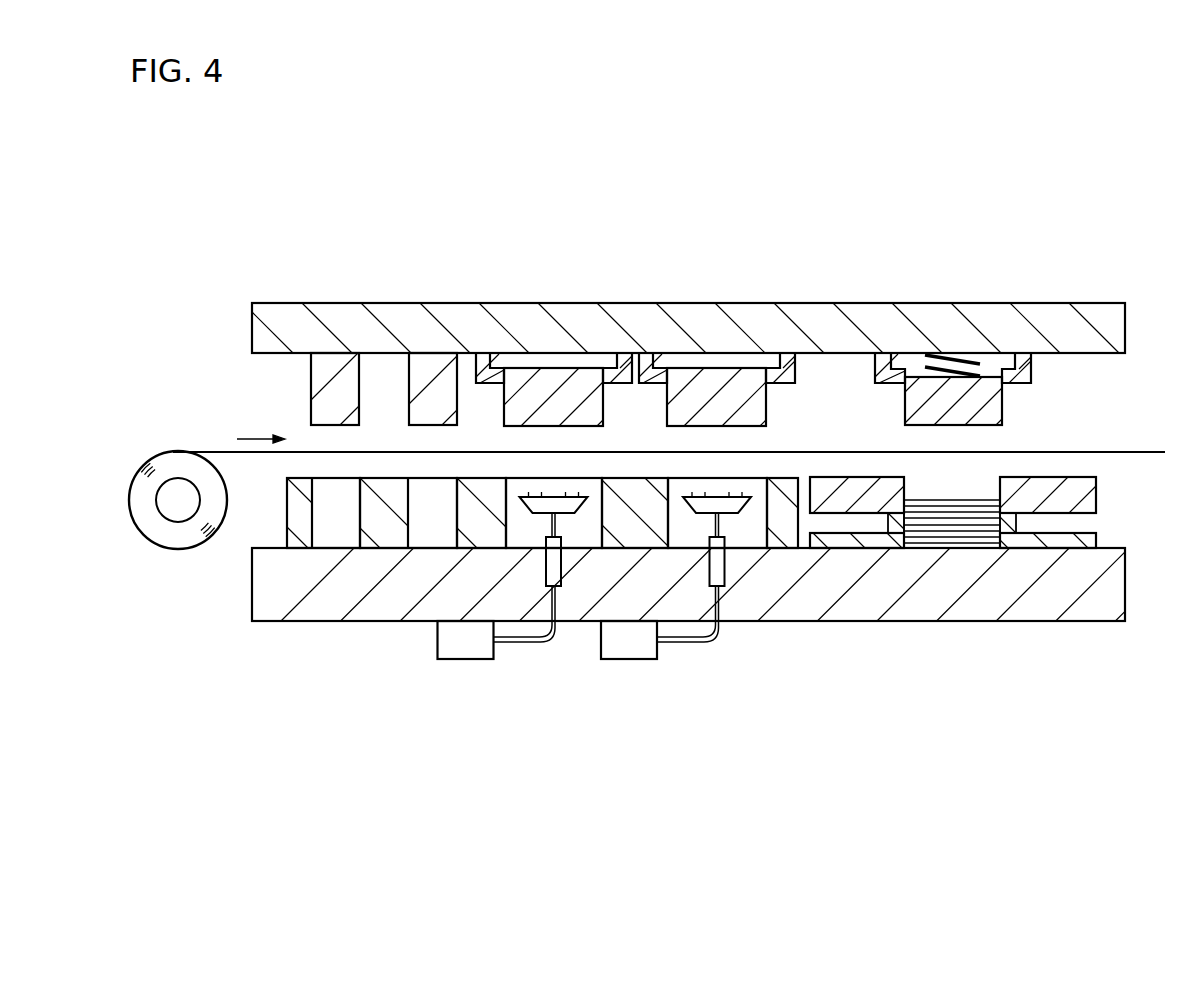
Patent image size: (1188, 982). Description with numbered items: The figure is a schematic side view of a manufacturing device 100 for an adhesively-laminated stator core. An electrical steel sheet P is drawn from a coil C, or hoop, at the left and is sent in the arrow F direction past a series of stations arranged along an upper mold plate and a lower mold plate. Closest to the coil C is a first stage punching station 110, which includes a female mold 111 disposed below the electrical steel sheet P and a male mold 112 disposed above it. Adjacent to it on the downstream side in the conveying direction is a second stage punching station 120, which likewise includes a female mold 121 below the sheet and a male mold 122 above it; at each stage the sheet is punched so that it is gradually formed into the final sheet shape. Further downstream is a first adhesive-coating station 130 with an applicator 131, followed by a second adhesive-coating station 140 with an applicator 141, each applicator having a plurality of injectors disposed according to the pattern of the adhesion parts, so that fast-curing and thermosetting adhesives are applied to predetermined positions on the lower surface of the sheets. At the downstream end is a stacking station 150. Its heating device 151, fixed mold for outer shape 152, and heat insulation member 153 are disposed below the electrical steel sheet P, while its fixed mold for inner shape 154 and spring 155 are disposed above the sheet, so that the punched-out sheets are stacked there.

The manufacturing device 100 is at (1090, 183).
The first stage punching station 110 is at (352, 346).
The female mold 111 is at (312, 518).
The male mold 112 is at (352, 383).
The second stage punching station 120 is at (452, 346).
The female mold 121 is at (408, 518).
The male mold 122 is at (452, 383).
The first adhesive-coating station 130 is at (528, 619).
The applicator 131 is at (580, 505).
The second adhesive-coating station 140 is at (692, 619).
The applicator 141 is at (744, 505).
The stacking station 150 is at (926, 349).
The heating device 151 is at (1017, 520).
The fixed mold for outer shape 152 is at (1097, 493).
The heat insulation member 153 is at (838, 540).
The fixed mold for inner shape 154 is at (1002, 400).
The spring 155 is at (967, 357).
The electrical steel sheet P is at (217, 450).
The arrow direction F is at (253, 437).
The coil C is at (148, 540).